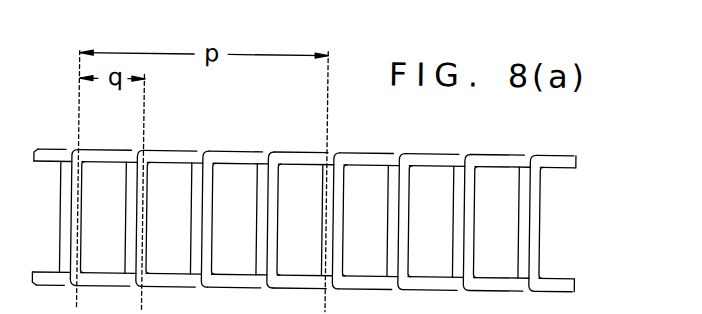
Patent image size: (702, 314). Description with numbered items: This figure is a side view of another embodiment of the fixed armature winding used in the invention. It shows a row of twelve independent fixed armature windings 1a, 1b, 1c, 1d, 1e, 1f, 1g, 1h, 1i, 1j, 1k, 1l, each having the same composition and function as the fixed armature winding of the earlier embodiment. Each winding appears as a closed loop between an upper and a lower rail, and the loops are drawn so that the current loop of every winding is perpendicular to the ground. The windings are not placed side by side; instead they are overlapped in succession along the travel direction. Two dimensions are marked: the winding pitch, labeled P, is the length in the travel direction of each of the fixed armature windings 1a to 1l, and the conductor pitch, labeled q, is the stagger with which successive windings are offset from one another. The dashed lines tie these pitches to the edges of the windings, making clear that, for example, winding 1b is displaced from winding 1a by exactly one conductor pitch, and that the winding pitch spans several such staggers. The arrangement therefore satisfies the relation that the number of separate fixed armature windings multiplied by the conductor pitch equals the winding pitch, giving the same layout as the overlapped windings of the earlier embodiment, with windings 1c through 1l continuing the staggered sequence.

The fixed armature winding 1a is at (61, 222).
The fixed armature winding 1b is at (126, 222).
The fixed armature winding 1c is at (192, 222).
The fixed armature winding 1d is at (258, 222).
The fixed armature winding 1e is at (323, 222).
The fixed armature winding 1f is at (388, 222).
The fixed armature winding 1g is at (454, 222).
The fixed armature winding 1h is at (520, 222).
The fixed armature winding 1i is at (360, 149).
The fixed armature winding 1j is at (425, 149).
The fixed armature winding 1k is at (490, 149).
The fixed armature winding 1l is at (558, 149).